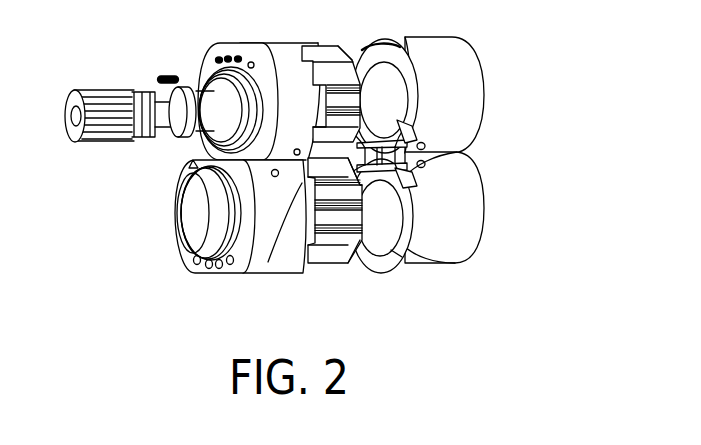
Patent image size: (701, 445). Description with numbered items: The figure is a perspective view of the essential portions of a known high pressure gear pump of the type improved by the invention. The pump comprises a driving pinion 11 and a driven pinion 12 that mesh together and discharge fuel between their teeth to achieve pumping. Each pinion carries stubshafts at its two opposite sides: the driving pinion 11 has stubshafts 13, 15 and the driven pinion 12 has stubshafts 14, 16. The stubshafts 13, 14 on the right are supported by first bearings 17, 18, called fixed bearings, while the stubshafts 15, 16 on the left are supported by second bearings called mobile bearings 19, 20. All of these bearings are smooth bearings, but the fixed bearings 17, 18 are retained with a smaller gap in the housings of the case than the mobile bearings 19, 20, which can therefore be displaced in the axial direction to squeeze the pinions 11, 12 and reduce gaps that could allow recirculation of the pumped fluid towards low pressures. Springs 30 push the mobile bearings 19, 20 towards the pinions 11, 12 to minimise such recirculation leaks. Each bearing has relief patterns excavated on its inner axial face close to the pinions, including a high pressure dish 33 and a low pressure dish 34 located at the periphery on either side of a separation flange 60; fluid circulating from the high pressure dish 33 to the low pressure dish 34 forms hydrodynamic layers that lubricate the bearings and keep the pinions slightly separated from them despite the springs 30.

The driving pinion 11 is at (331, 46).
The driven pinion 12 is at (325, 257).
The stubshaft 13 is at (372, 73).
The stubshaft 14 is at (363, 257).
The stubshaft 15 is at (203, 137).
The stubshaft 16 is at (197, 199).
The first bearing 17 is at (440, 46).
The first bearing 18 is at (447, 250).
The mobile bearing 19 is at (265, 52).
The mobile bearing 20 is at (268, 258).
The spring 30 is at (166, 76).
The high pressure dish 33 is at (410, 137).
The low pressure dish 34 is at (398, 108).
The separation flange 60 is at (398, 115).